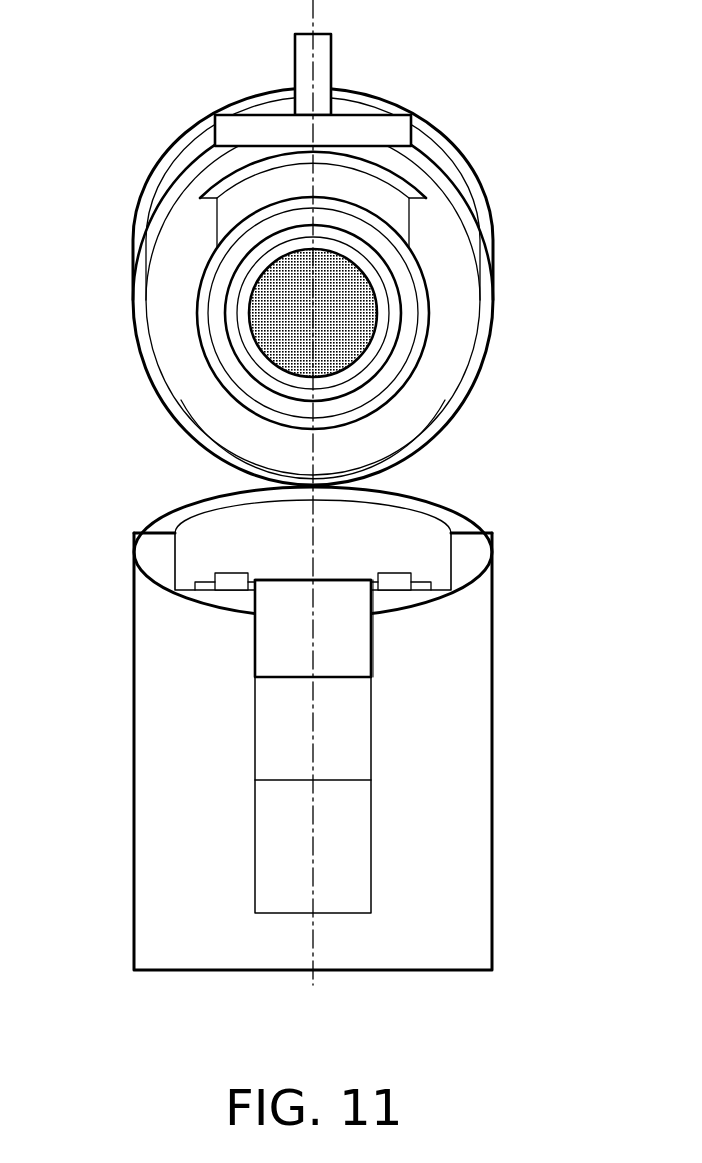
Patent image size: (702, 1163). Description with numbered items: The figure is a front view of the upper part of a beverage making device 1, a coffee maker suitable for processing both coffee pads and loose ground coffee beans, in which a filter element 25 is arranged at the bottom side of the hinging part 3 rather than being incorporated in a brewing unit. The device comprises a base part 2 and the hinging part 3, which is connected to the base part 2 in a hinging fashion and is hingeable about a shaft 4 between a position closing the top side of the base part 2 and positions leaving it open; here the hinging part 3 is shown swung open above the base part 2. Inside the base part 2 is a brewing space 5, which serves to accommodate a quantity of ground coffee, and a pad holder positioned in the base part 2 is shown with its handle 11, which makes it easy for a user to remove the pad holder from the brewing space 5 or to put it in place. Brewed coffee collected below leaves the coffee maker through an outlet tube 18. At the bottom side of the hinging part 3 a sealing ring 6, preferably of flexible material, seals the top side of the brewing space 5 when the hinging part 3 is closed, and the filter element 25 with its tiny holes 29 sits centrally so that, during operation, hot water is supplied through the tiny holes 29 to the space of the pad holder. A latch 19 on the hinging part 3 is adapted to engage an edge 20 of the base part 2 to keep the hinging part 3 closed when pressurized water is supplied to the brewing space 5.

The beverage making device 1 is at (116, 666).
The base part 2 is at (157, 913).
The hinging part 3 is at (163, 346).
The shaft 4 is at (353, 486).
The brewing space 5 is at (276, 576).
The sealing ring 6 is at (262, 401).
The handle 11 is at (351, 650).
The outlet tube 18 is at (351, 860).
The latch 19 is at (377, 125).
The edge 20 is at (397, 578).
The filter element 25 is at (353, 317).
The tiny holes 29 is at (360, 347).